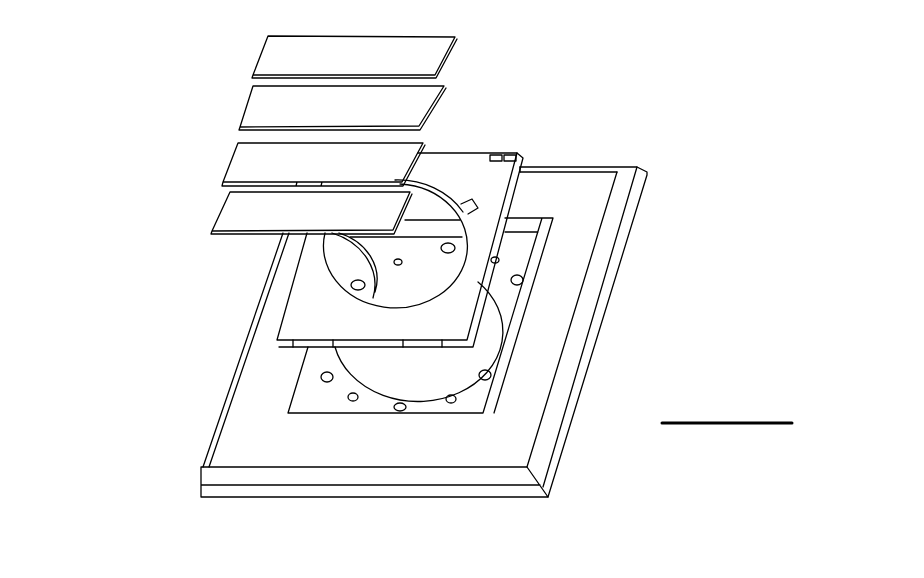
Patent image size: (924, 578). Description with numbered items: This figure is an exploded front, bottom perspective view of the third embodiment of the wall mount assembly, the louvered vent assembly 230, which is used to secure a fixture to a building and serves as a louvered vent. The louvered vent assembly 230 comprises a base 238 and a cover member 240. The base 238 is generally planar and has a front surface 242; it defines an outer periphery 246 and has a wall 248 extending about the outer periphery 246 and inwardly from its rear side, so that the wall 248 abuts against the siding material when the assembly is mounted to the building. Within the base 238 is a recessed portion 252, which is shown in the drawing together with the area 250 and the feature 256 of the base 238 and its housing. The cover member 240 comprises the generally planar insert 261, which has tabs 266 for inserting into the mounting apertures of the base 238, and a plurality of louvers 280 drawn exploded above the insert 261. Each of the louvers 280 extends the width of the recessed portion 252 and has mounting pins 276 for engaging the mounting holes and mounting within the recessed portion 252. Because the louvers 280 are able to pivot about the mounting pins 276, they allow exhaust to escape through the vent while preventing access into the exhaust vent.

The louvered vent assembly 230 is at (701, 67).
The base 238 is at (600, 187).
The cover member 240 is at (174, 167).
The front surface 242 is at (565, 187).
The outer periphery 246 is at (593, 227).
The wall 248 is at (637, 195).
The housing 250 is at (467, 413).
The recessed portion 252 is at (478, 387).
The recess 256 is at (490, 284).
The generally planar insert 261 is at (346, 318).
The tabs 266 is at (305, 341).
The mounting pins 276 is at (266, 37).
The louvers 280 is at (263, 100).